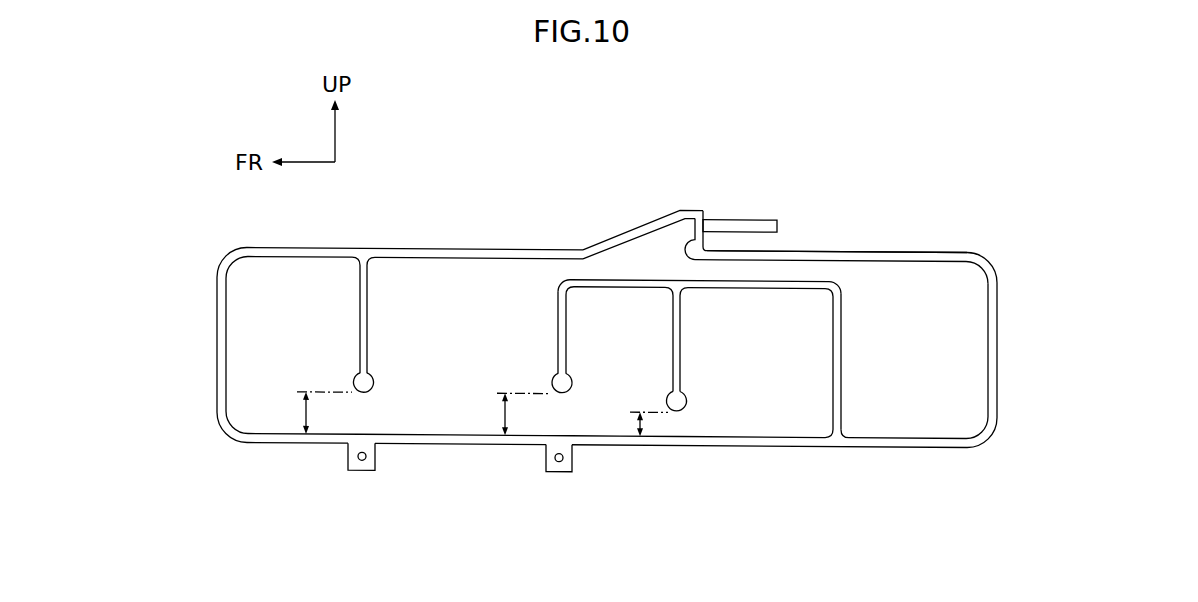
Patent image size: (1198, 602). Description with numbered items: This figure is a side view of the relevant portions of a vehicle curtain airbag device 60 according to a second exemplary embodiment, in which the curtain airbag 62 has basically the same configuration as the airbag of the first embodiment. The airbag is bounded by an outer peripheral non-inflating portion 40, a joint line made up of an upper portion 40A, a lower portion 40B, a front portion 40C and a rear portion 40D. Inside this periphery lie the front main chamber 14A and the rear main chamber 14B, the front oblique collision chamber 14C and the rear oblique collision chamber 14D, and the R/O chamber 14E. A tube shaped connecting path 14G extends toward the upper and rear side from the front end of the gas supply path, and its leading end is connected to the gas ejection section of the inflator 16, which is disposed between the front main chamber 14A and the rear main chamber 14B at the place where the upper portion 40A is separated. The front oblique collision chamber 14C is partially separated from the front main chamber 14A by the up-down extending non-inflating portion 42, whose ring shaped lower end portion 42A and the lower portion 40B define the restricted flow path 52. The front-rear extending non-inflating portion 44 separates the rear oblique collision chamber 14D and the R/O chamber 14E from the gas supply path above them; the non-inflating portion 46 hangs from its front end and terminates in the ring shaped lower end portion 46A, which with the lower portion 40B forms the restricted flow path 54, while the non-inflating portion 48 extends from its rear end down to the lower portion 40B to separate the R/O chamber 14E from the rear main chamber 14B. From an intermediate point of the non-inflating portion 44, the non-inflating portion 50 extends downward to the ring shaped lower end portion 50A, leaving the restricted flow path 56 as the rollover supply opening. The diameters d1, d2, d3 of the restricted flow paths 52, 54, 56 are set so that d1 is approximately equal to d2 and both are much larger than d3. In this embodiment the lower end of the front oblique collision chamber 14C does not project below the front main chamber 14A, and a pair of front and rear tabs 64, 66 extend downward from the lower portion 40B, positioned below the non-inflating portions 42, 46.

The front main chamber 14A is at (472, 295).
The rear main chamber 14B is at (928, 292).
The front oblique collision chamber 14C is at (300, 272).
The rear oblique collision chamber 14D is at (598, 305).
The R/O chamber 14E is at (775, 400).
The connecting path 14G is at (668, 222).
The inflator 16 is at (757, 220).
The outer peripheral non-inflating portion 40 is at (910, 452).
The upper portion of outer peripheral non-inflating portion 40A is at (400, 249).
The lower portion of outer peripheral non-inflating portion 40B is at (435, 443).
The front portion of outer peripheral non-inflating portion 40C is at (225, 316).
The rear portion of outer peripheral non-inflating portion 40D is at (988, 327).
The non-inflating portion 42 is at (367, 318).
The lower end portion of non-inflating portion 42 42A is at (373, 383).
The non-inflating portion 44 is at (772, 290).
The non-inflating portion 46 is at (558, 333).
The lower end portion of non-inflating portion 46 46A is at (555, 382).
The non-inflating portion 48 is at (840, 370).
The non-inflating portion 50 is at (682, 353).
The lower end portion of non-inflating portion 50 50A is at (670, 390).
The restricted flow path 52 is at (360, 417).
The restricted flow path 54 is at (553, 415).
The restricted flow path 56 is at (680, 427).
The vehicle curtain airbag device 60 is at (713, 181).
The curtain airbag 62 is at (836, 240).
The tab 64 is at (355, 472).
The tab 66 is at (562, 473).
The diameter of restricted flow path 52 d1 is at (304, 413).
The diameter of restricted flow path 54 d2 is at (503, 413).
The diameter of restricted flow path 56 d3 is at (638, 418).